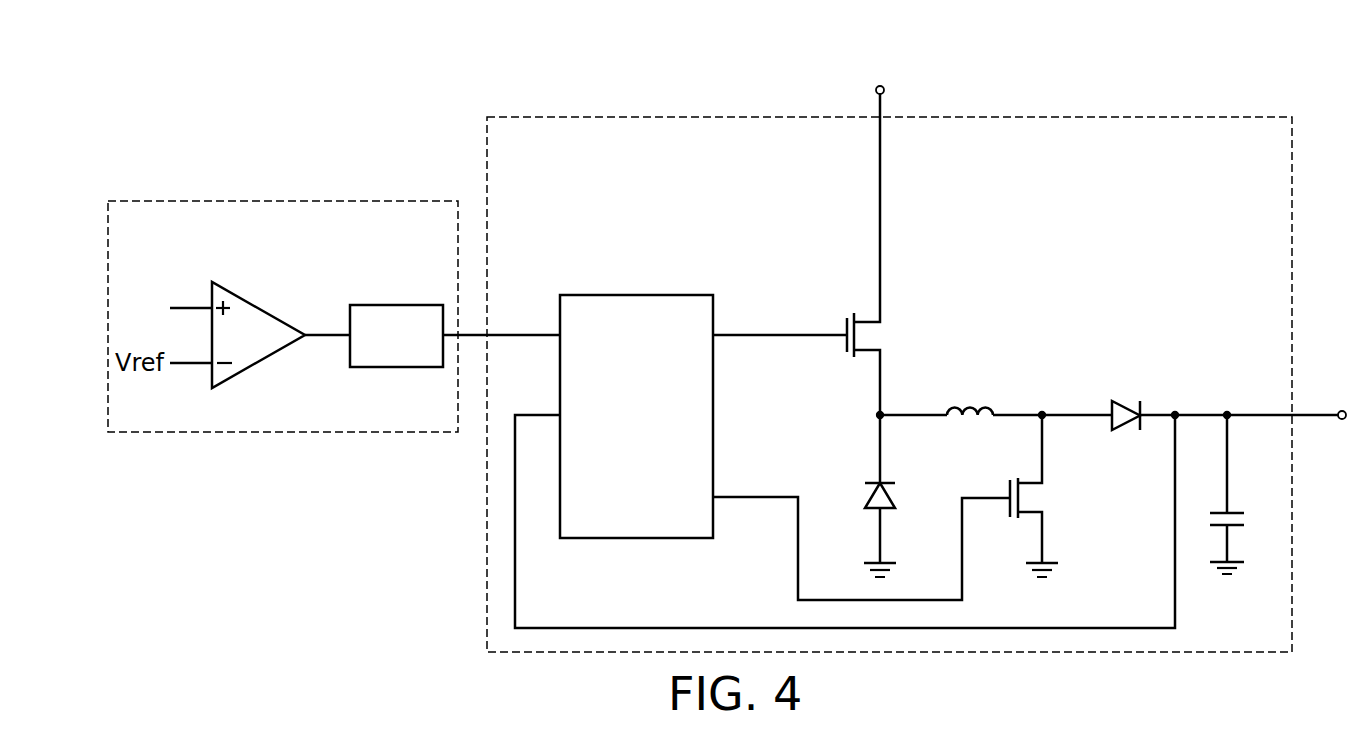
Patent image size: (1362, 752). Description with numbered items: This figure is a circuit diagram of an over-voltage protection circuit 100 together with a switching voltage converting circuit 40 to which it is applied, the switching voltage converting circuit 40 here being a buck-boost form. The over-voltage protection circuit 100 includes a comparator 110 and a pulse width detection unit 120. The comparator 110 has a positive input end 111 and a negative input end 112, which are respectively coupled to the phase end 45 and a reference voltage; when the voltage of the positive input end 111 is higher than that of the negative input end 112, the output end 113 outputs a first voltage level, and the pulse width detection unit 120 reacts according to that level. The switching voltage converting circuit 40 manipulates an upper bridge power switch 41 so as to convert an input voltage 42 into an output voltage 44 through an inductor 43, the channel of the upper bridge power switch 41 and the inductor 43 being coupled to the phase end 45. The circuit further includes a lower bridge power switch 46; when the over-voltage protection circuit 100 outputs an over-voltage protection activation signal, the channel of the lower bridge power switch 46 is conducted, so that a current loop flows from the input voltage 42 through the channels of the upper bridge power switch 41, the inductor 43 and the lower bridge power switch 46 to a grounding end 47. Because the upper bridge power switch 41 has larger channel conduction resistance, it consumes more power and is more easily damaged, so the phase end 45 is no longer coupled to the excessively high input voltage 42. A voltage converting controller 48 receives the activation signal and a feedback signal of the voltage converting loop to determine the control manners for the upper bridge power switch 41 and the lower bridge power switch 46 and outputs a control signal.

The over-voltage protection circuit 100 is at (168, 240).
The comparator 110 is at (267, 352).
The positive input end 111 is at (210, 302).
The negative input end 112 is at (210, 370).
The output end 113 is at (305, 332).
The pulse width detection unit 120 is at (417, 352).
The switching voltage converting circuit 40 is at (528, 160).
The upper bridge power switch 41 is at (876, 324).
The input voltage 42 is at (880, 86).
The inductor 43 is at (968, 408).
The output voltage 44 is at (1342, 410).
The phase end 45 is at (886, 420).
The lower bridge power switch 46 is at (1040, 487).
The grounding end 47 is at (1055, 568).
The voltage converting controller 48 is at (650, 432).